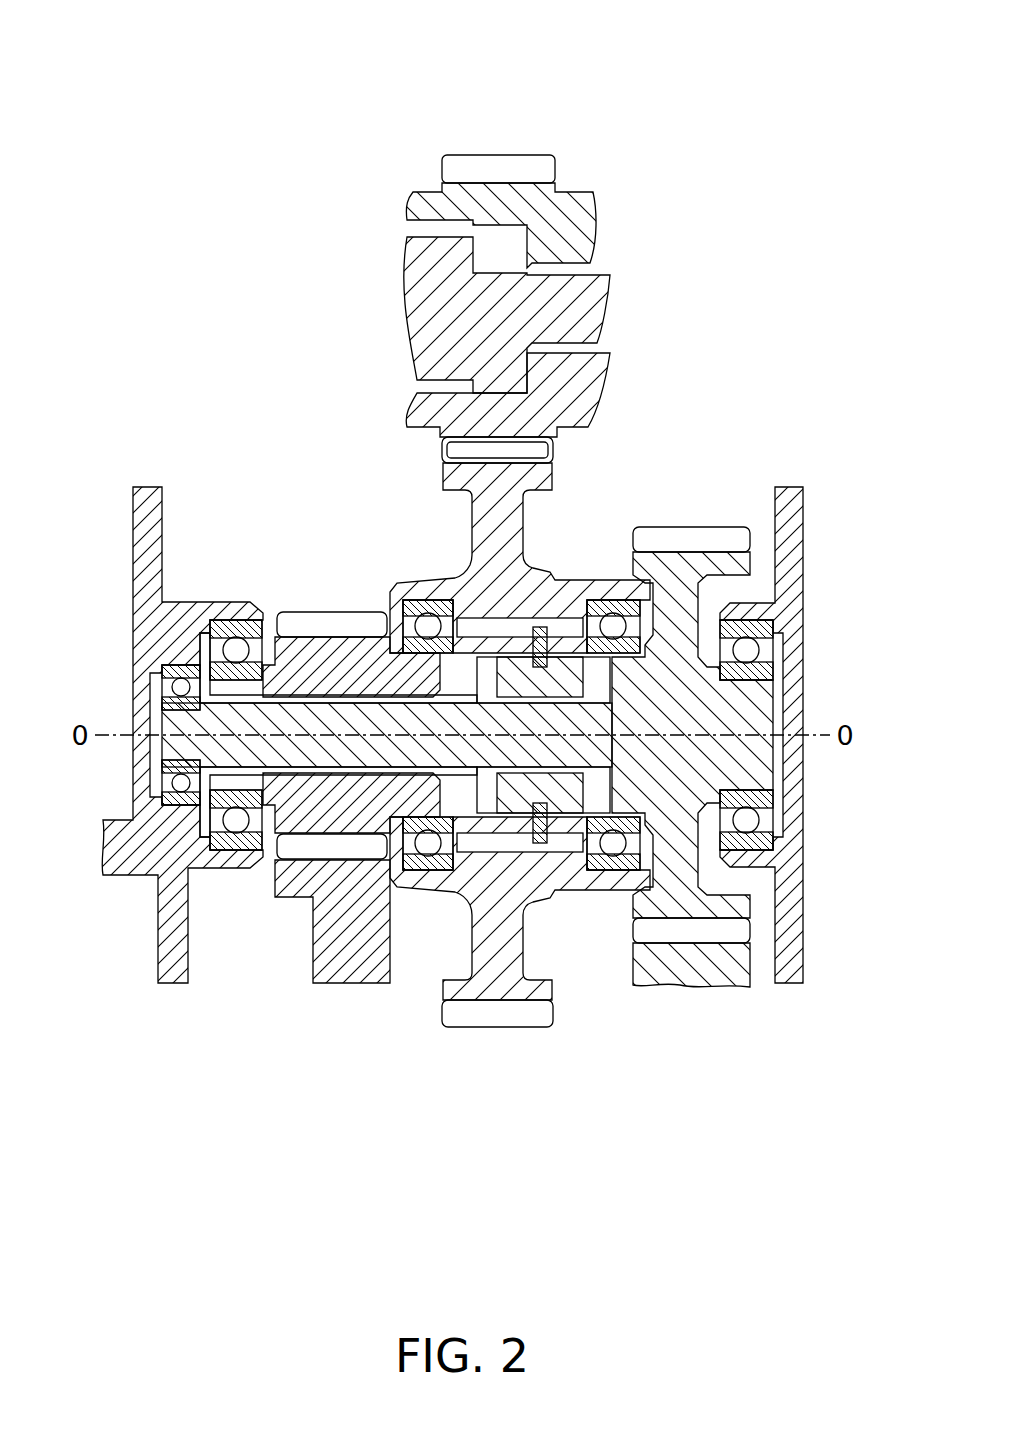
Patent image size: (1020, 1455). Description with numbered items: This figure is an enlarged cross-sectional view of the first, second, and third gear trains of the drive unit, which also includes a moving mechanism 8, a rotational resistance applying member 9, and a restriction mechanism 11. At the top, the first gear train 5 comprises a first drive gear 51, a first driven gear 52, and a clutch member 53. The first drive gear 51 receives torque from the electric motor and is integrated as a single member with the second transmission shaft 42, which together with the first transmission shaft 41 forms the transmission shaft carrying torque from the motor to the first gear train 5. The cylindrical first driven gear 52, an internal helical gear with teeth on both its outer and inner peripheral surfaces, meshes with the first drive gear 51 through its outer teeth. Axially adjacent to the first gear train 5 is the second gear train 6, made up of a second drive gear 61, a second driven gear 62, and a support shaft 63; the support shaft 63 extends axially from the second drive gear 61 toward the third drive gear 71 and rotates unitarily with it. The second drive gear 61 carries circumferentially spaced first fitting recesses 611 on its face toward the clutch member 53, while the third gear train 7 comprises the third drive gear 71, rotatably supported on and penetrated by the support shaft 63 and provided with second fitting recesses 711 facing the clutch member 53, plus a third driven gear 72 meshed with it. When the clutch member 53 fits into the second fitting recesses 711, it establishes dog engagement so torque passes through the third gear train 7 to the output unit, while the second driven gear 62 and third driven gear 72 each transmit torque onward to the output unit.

The first gear train 5 is at (536, 532).
The first drive gear 51 is at (527, 158).
The first driven gear 52 is at (480, 510).
The clutch member 53 is at (562, 820).
The first transmission shaft 41 is at (583, 308).
The second transmission shaft 42 is at (583, 198).
The second gear train 6 is at (635, 664).
The second drive gear 61 is at (695, 557).
The second driven gear 62 is at (745, 965).
The support shaft 63 is at (470, 757).
The first fitting recesses 611 is at (563, 600).
The third gear train 7 is at (289, 668).
The third drive gear 71 is at (300, 625).
The second fitting recesses 711 is at (470, 567).
The third driven gear 72 is at (318, 953).
The moving mechanism 8 is at (559, 600).
The rotational resistance applying member 9 is at (585, 717).
The restriction mechanism 11 is at (528, 860).